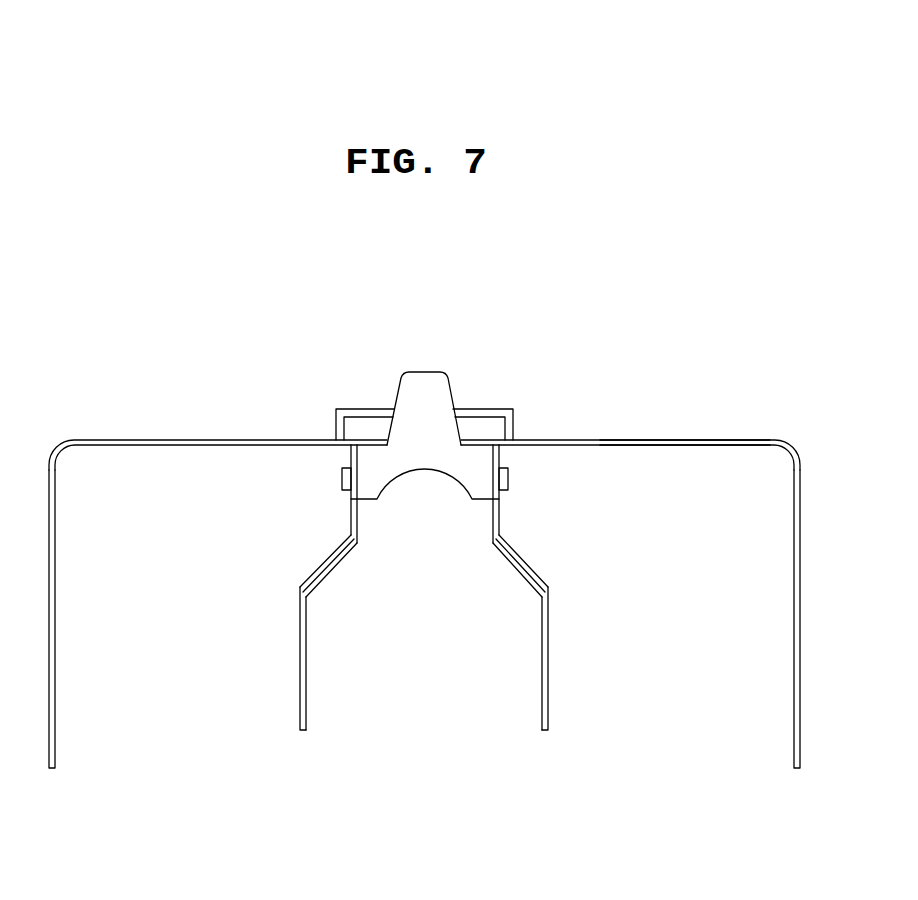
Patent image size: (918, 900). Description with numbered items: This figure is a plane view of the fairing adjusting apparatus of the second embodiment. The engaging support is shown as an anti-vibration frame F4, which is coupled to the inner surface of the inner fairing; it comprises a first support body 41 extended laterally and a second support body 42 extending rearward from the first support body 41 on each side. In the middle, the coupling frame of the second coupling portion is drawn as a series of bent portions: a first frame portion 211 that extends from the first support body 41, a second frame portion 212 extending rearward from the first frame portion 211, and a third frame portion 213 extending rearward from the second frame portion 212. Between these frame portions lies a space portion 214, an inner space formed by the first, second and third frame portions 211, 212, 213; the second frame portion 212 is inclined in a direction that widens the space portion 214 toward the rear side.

The first support body 41 is at (198, 445).
The second support body 42 is at (55, 623).
The anti-vibration frame F4 is at (698, 445).
The first frame portion 211 is at (499, 512).
The second frame portion 212 is at (530, 565).
The third frame portion 213 is at (548, 653).
The space portion 214 is at (450, 592).